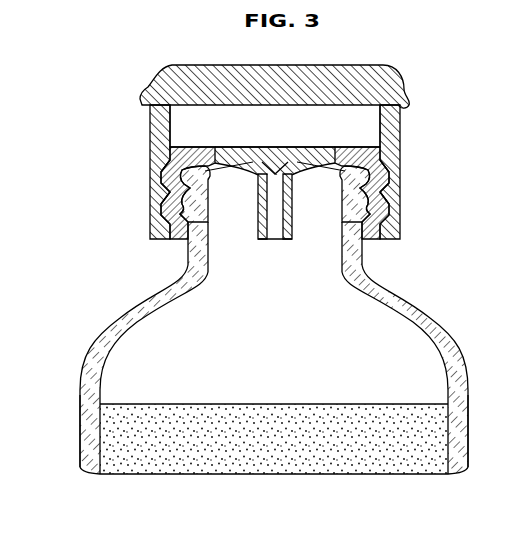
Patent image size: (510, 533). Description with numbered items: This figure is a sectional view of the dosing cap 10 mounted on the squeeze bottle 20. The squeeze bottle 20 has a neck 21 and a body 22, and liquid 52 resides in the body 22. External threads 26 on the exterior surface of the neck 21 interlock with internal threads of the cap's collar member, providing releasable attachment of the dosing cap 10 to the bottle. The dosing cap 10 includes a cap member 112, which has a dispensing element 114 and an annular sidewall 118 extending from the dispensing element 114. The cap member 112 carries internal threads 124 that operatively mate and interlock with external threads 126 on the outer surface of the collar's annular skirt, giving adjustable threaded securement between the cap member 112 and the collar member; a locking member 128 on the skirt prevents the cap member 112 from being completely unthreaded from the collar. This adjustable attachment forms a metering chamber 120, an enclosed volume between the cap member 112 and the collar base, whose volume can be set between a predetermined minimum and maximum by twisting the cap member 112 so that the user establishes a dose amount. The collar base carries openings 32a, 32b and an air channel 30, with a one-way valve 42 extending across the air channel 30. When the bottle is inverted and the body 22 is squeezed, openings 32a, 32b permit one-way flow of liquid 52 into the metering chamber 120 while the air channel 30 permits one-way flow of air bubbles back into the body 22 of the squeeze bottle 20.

The dosing cap 10 is at (147, 68).
The squeeze bottle 20 is at (62, 346).
The neck 21 is at (187, 246).
The body 22 is at (78, 449).
The external threads 26 is at (203, 213).
The air channel 30 is at (277, 247).
The opening 32a is at (315, 155).
The opening 32b is at (233, 152).
The one-way valve 42 is at (278, 160).
The liquid 52 is at (276, 411).
The cap member 112 is at (135, 128).
The dispensing element 114 is at (402, 75).
The annular sidewall 118 is at (149, 117).
The metering chamber 120 is at (236, 126).
The internal threads 124 is at (165, 180).
The external threads 126 is at (160, 193).
The locking member 128 is at (166, 152).